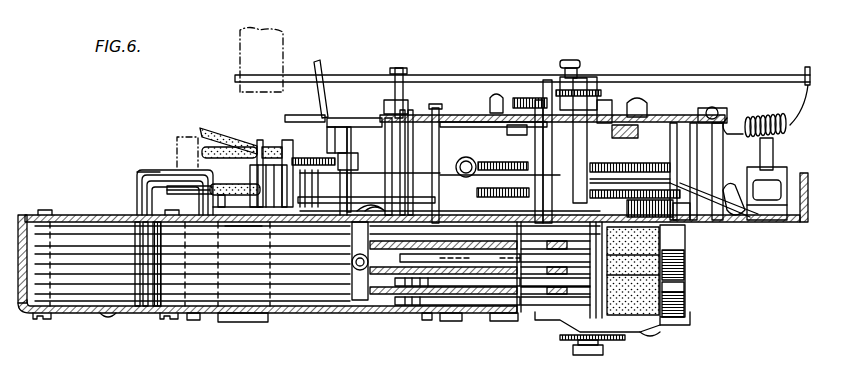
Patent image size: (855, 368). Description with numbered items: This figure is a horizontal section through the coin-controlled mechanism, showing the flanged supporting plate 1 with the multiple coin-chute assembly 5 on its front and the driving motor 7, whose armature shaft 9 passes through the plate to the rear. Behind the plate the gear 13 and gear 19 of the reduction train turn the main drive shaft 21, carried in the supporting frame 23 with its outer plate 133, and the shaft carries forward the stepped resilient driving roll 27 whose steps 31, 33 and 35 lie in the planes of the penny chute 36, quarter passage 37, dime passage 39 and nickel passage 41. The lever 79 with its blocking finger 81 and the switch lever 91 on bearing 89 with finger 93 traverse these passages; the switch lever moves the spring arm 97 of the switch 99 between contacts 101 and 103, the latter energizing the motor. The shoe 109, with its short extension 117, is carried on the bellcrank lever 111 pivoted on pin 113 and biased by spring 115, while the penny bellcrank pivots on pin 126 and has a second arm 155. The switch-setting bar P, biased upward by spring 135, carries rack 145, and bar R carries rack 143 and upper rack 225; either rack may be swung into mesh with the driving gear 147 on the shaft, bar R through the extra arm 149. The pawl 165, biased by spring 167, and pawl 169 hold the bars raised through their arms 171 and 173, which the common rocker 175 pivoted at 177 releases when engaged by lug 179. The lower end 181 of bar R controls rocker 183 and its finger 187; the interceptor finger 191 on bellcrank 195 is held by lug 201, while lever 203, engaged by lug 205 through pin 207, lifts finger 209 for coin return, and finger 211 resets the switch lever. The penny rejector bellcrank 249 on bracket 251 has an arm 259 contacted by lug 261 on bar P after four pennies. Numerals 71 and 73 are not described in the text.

The supporting plate 1 is at (88, 215).
The multiple coin-chute assembly 5 is at (112, 299).
The driving motor 7 is at (686, 258).
The armature shaft 9 is at (573, 350).
The gear 13 is at (738, 222).
The gear 19 is at (650, 158).
The main drive shaft 21 is at (578, 60).
The supporting frame 23 is at (340, 126).
The stepped resilient driving roll 27 is at (686, 318).
The quarter-penny step 31 is at (686, 270).
The nickel step 33 is at (668, 330).
The dime step 35 is at (686, 290).
The penny chute 36 is at (410, 228).
The quarter coin passage 37 is at (395, 262).
The dime coin passage 39 is at (400, 288).
The nickel coin passage 41 is at (400, 306).
The bracket 71 is at (193, 246).
The foot 73 is at (200, 320).
The lever 79 is at (533, 222).
The blocking finger 81 is at (500, 321).
The bearing 89 is at (285, 148).
The switch lever 91 is at (352, 228).
The finger 93 is at (427, 320).
The spring arm 97 is at (235, 190).
The single-pole double-throw switch 99 is at (250, 222).
The switch contact 101 is at (245, 137).
The switch contact 103 is at (280, 163).
The shoe 109 is at (352, 270).
The bellcrank lever 111 is at (590, 228).
The pin 113 is at (546, 95).
The spring 115 is at (665, 230).
The short extension 117 is at (450, 321).
The pin 126 is at (536, 166).
The outer plate 133 is at (448, 115).
The spring 135 is at (470, 160).
The toothed rack 143 is at (650, 100).
The toothed rack 145 is at (495, 93).
The driving gear 147 is at (604, 100).
The extra arm 149 is at (588, 90).
The second arm 155 is at (520, 97).
The pawl 165 is at (750, 118).
The spring 167 is at (770, 115).
The pawl 169 is at (392, 100).
The arm 171 is at (806, 66).
The arm 173 is at (318, 62).
The common rocker 175 is at (298, 75).
The pivot 177 is at (565, 60).
The lug 179 is at (242, 32).
The lower end of bar R 181 is at (700, 140).
The rocker 183 is at (150, 172).
The finger 187 is at (157, 313).
The finger 191 is at (236, 322).
The bellcrank 195 is at (222, 195).
The lug 201 is at (186, 135).
The lever 203 is at (175, 185).
The lug 205 is at (300, 150).
The pin 207 is at (315, 118).
The finger 209 is at (138, 313).
The finger 211 is at (378, 296).
The upper second rack 225 is at (622, 138).
The penny rejector bellcrank 249 is at (388, 118).
The bracket 251 is at (380, 175).
The arm 259 is at (436, 104).
The lug 261 is at (399, 68).
The shiftable switch-setting bar P is at (466, 122).
The shiftable switch-setting bar R is at (672, 120).